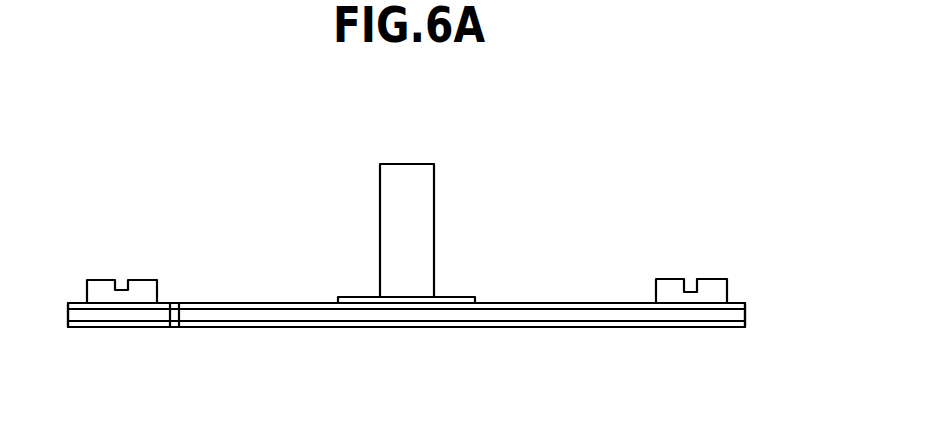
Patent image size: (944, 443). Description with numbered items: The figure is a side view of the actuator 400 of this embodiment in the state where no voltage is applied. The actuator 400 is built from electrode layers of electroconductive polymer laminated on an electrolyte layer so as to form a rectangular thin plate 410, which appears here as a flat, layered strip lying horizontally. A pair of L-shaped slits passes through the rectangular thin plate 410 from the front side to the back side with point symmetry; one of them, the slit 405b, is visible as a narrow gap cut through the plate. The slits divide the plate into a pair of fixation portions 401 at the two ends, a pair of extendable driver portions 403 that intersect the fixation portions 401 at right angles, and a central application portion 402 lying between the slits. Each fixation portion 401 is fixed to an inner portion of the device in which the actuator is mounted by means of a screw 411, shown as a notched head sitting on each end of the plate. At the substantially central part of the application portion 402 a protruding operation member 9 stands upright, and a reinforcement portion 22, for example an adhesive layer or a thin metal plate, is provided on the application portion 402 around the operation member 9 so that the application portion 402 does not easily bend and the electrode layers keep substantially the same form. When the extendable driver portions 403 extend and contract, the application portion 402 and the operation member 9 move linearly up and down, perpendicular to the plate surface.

The actuator 400 is at (544, 168).
The rectangular thin plate 410 is at (561, 297).
The application portion 402 is at (410, 333).
The extendable driver portion 403 is at (528, 333).
The fixation portion 401 is at (107, 334).
The L-shaped slit 405b is at (176, 314).
The screw 411 is at (102, 285).
The reinforcement portion 22 is at (452, 302).
The operation member 9 is at (425, 183).